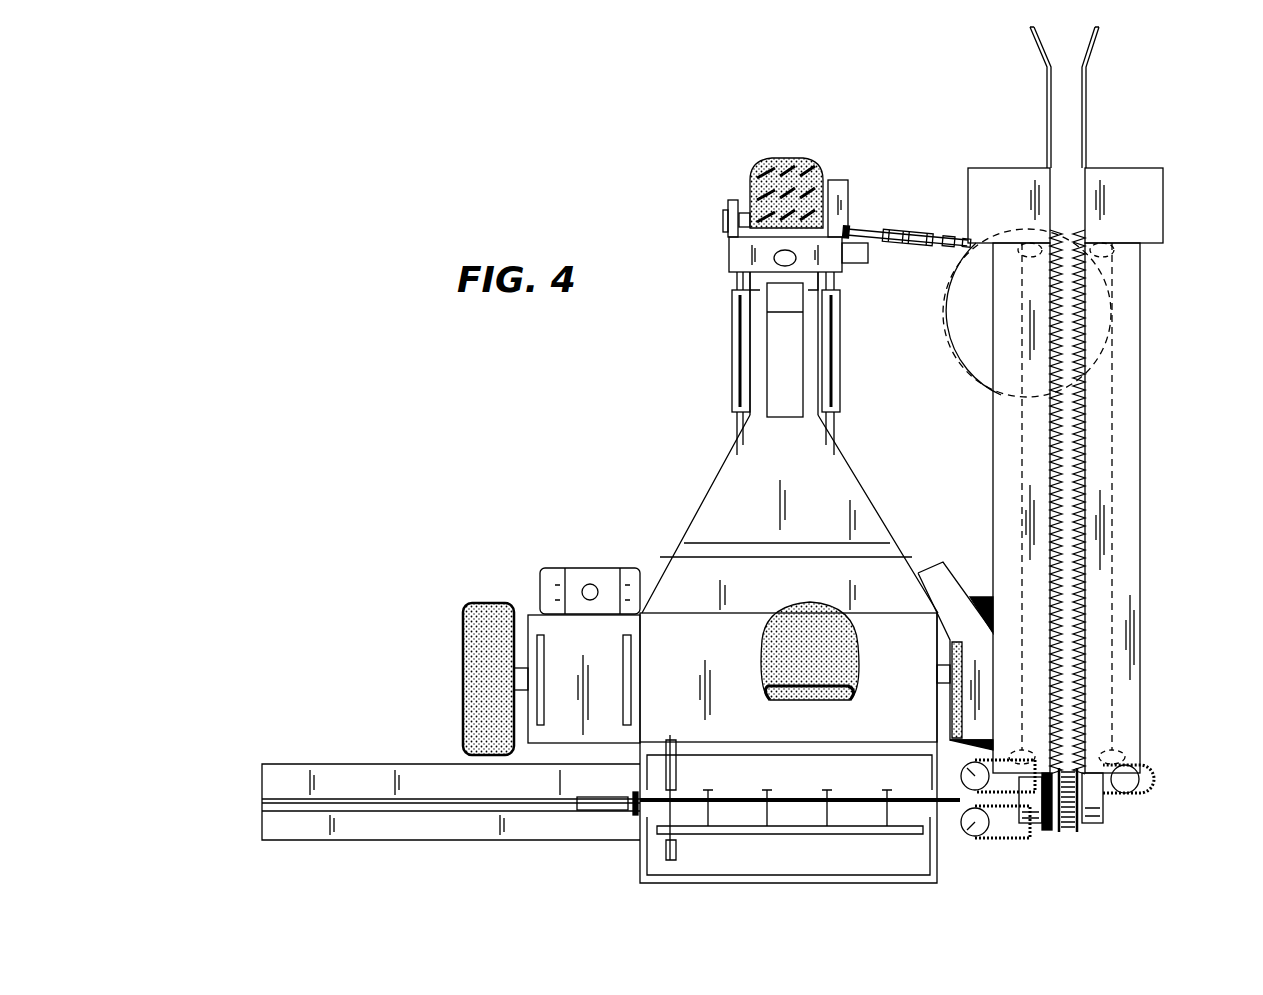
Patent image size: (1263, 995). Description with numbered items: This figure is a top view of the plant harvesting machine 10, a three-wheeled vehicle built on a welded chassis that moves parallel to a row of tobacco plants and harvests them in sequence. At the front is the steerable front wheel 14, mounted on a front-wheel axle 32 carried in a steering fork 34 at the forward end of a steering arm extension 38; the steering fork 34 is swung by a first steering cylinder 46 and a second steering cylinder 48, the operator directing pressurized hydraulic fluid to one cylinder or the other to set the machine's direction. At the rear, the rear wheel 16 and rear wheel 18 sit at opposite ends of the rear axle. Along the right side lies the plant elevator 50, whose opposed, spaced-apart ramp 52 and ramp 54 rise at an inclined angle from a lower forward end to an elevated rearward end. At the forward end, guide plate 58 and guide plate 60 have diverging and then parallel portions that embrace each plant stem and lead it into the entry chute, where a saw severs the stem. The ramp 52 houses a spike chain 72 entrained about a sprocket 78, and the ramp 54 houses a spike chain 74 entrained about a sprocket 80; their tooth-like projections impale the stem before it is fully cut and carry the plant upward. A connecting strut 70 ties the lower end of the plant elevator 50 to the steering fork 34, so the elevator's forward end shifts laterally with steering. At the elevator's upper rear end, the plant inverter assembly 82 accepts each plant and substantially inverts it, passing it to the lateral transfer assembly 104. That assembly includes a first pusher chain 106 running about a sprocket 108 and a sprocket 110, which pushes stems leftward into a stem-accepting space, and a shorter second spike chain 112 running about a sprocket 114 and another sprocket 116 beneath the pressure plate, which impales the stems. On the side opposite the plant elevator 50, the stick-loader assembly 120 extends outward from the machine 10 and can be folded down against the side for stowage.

The plant harvesting machine 10 is at (486, 420).
The steerable front wheel 14 is at (790, 160).
The rear wheel 16 is at (472, 604).
The rear wheel 18 is at (985, 600).
The front-wheel axle 32 is at (735, 200).
The steering fork 34 is at (729, 256).
The steering arm extension 38 is at (770, 312).
The first steering cylinder 46 is at (732, 352).
The second steering cylinder 48 is at (840, 346).
The plant elevator 50 is at (1150, 568).
The ramp 52 is at (1130, 403).
The ramp 54 is at (1000, 420).
The guide plate 58 is at (1047, 118).
The guide plate 60 is at (1086, 118).
The connecting strut 70 is at (905, 235).
The spike chain 72 is at (1080, 462).
The spike chain 74 is at (1057, 470).
The sprocket 78 is at (1100, 240).
The sprocket 80 is at (1032, 240).
The plant inverter assembly 82 is at (1105, 834).
The lateral transfer assembly 104 is at (1138, 808).
The first pusher chain 106 is at (1150, 775).
The sprocket 108 is at (955, 765).
The sprocket 110 is at (1125, 776).
The second spike chain 112 is at (1020, 848).
The sprocket 114 is at (968, 847).
The sprocket 116 is at (1060, 845).
The stick-loader assembly 120 is at (288, 851).